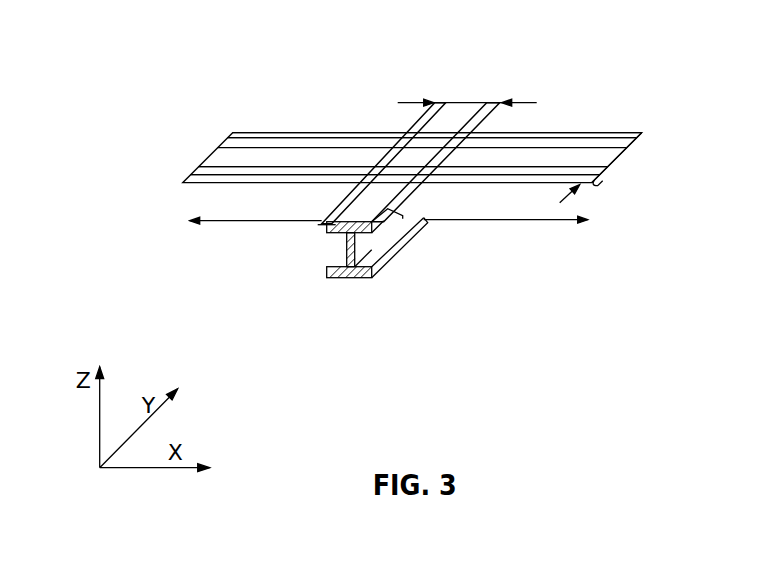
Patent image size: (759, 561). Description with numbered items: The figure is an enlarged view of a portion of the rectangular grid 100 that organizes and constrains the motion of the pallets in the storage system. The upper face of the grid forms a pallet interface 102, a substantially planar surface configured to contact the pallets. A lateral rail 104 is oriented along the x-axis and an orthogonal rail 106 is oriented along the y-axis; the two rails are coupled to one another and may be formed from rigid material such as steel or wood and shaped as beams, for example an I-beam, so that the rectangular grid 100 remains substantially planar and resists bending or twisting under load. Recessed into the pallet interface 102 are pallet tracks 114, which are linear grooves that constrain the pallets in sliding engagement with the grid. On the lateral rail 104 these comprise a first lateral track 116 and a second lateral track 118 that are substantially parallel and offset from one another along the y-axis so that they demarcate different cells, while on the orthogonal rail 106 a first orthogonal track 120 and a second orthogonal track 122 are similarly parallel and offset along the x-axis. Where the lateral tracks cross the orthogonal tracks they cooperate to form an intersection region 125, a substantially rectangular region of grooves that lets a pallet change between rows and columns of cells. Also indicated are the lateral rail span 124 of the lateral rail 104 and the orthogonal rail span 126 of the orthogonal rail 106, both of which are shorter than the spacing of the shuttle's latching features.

The rectangular grid 100 is at (440, 222).
The pallet interface 102 is at (574, 133).
The lateral rail 104 is at (182, 217).
The orthogonal rail 106 is at (350, 279).
The pallet track 114 is at (292, 100).
The first lateral track 116 is at (232, 135).
The second lateral track 118 is at (203, 170).
The first orthogonal track 120 is at (448, 102).
The second orthogonal track 122 is at (487, 102).
The lateral rail span 124 is at (641, 132).
The intersection region 125 is at (393, 130).
The orthogonal rail span 126 is at (535, 103).